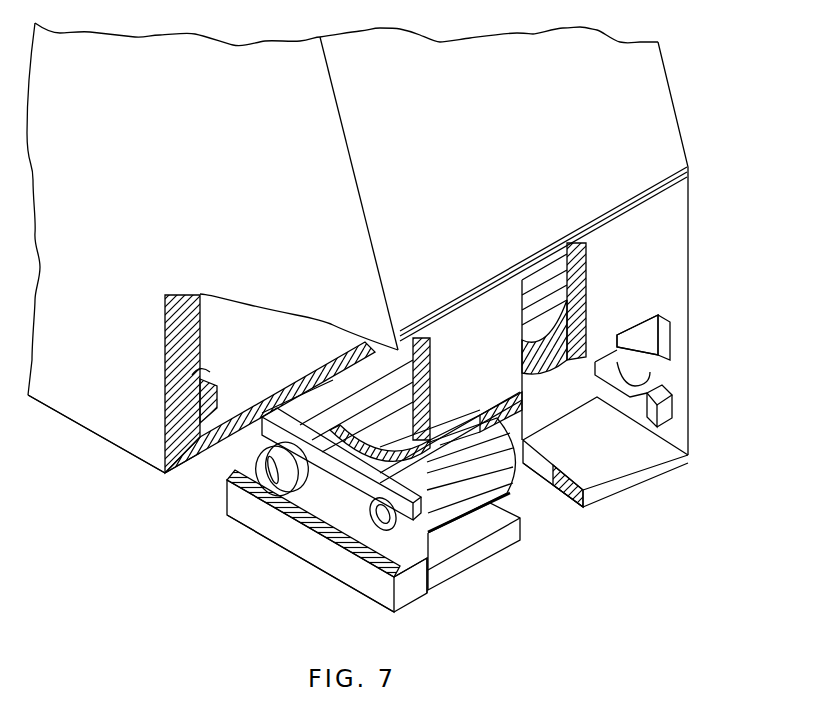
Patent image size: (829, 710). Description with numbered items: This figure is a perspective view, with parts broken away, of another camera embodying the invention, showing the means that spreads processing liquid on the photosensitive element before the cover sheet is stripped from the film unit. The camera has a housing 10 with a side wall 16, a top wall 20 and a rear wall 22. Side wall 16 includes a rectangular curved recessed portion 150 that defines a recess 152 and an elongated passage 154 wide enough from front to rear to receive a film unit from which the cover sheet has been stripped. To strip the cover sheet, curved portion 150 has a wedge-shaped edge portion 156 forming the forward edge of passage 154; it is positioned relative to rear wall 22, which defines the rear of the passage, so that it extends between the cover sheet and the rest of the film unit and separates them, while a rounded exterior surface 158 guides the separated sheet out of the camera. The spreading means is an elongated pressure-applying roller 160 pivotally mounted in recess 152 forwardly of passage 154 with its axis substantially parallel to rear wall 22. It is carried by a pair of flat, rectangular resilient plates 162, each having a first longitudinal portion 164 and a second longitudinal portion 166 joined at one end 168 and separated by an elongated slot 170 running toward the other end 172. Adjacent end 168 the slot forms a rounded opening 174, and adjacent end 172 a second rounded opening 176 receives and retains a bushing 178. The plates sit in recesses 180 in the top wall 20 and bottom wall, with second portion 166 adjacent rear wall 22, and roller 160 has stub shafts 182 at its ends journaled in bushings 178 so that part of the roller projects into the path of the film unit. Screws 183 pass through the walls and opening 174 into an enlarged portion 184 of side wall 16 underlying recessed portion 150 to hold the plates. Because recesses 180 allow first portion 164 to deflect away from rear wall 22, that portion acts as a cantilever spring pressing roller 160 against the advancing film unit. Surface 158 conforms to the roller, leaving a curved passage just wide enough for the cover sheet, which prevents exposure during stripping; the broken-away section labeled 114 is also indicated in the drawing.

The housing 10 is at (78, 422).
The side wall 16 is at (513, 160).
The top wall 20 is at (216, 173).
The rear wall 22 is at (260, 336).
The wall section post 114 is at (200, 377).
The curved recessed portion 150 is at (590, 360).
The recess 152 is at (475, 425).
The elongated passage 154 is at (585, 433).
The wedge-shaped edge portion 156 is at (603, 478).
The rounded exterior surface 158 is at (545, 408).
The pressure-applying roller 160 is at (487, 468).
The plate 162 is at (610, 353).
The first longitudinal portion 164 is at (307, 450).
The second longitudinal portion 166 is at (330, 507).
The end of plate 168 is at (245, 462).
The elongated slot 170 is at (300, 500).
The other end of plate 172 is at (667, 368).
The rounded opening 174 is at (255, 440).
The second rounded opening 176 is at (688, 455).
The bushing 178 is at (343, 540).
The recess 180 is at (640, 332).
The stub shaft 182 is at (367, 577).
The screw 183 is at (232, 512).
The enlarged portion 184 is at (313, 400).